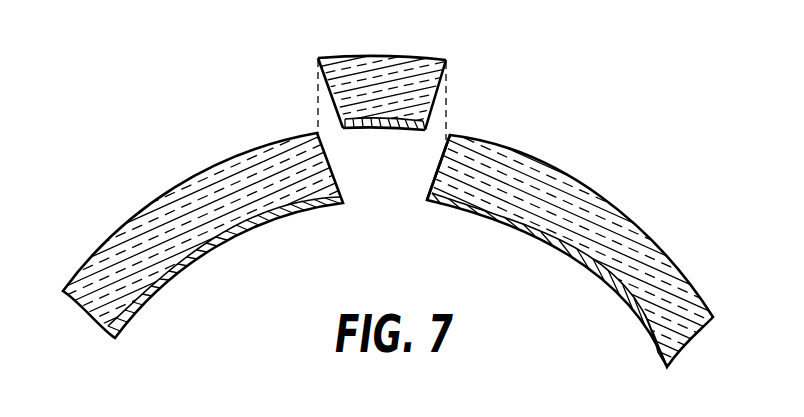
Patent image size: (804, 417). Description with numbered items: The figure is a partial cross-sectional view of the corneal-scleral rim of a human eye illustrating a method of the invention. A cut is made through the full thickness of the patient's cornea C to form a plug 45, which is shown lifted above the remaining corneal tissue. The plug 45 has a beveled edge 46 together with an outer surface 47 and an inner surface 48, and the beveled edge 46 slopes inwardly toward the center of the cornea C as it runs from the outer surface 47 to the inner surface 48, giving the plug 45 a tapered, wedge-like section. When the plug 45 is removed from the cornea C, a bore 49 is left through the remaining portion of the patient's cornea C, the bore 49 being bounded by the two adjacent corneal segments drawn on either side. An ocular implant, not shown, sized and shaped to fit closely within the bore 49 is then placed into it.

The plug 45 is at (411, 84).
The beveled edge 46 is at (445, 90).
The outer surface 47 is at (355, 54).
The inner surface 48 is at (390, 132).
The bore 49 is at (437, 170).
The cornea C is at (555, 253).